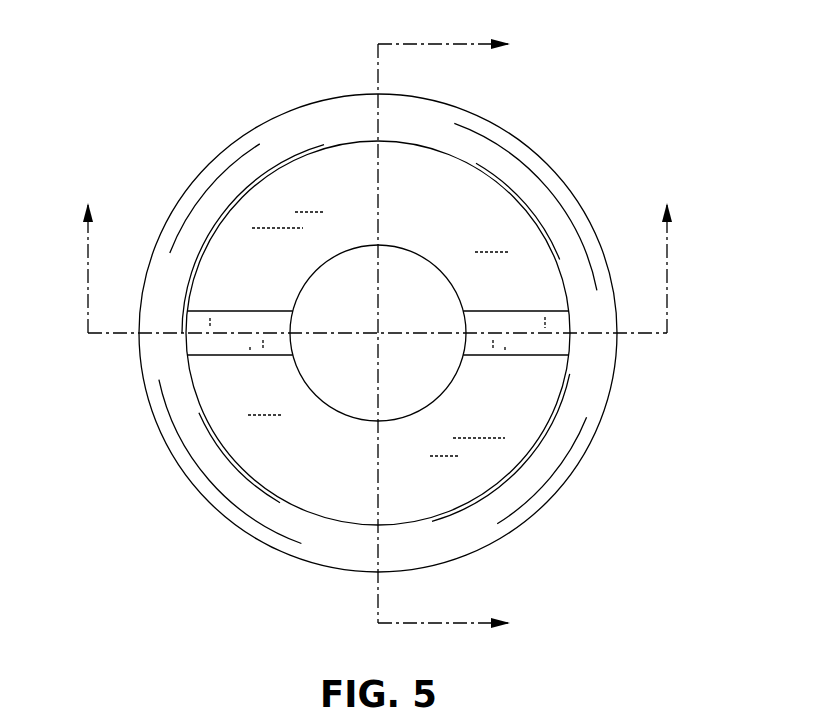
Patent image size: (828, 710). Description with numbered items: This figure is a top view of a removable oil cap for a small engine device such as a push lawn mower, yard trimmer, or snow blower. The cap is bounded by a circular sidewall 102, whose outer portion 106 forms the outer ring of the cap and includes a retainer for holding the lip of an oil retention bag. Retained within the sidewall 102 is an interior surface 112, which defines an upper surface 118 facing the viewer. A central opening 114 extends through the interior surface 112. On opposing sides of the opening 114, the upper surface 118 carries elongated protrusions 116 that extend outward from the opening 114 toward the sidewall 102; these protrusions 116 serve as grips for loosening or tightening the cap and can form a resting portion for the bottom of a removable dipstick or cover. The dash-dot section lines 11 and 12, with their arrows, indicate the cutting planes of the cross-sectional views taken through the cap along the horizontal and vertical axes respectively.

The section line 11- 11 is at (379, 250).
The section line 12- 12 is at (464, 333).
The sidewall 102 is at (604, 466).
The outer portion 106 is at (540, 467).
The interior surface 112 is at (333, 181).
The opening 114 is at (347, 365).
The elongated protrusions 116 is at (220, 343).
The upper surface 118 is at (440, 182).